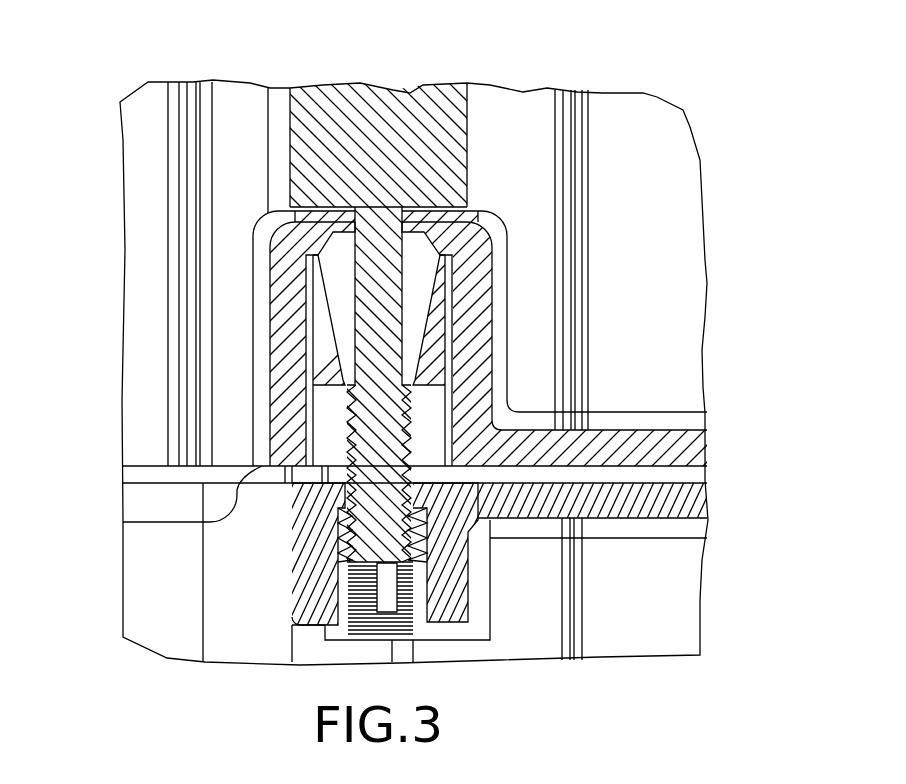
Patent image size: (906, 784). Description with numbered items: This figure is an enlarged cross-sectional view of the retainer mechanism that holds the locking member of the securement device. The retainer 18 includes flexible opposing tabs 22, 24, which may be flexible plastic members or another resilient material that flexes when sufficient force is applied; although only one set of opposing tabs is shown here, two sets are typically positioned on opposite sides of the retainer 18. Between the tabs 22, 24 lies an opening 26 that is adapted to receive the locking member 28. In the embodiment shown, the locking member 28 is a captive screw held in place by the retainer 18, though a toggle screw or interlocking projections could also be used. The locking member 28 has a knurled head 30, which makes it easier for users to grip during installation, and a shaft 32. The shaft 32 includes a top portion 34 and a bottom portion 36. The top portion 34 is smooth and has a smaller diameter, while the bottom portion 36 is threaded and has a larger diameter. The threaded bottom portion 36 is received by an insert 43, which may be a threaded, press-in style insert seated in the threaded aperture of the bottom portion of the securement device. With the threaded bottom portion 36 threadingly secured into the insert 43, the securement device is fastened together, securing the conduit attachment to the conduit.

The retainer 18 is at (493, 315).
The opposing tab 22 is at (417, 363).
The opposing tab 24 is at (343, 360).
The opening 26 is at (343, 250).
The locking member 28 is at (503, 185).
The knurled head 30 is at (362, 100).
The shaft 32 is at (438, 278).
The top portion 34 is at (410, 247).
The bottom portion 36 is at (412, 548).
The insert 43 is at (405, 548).